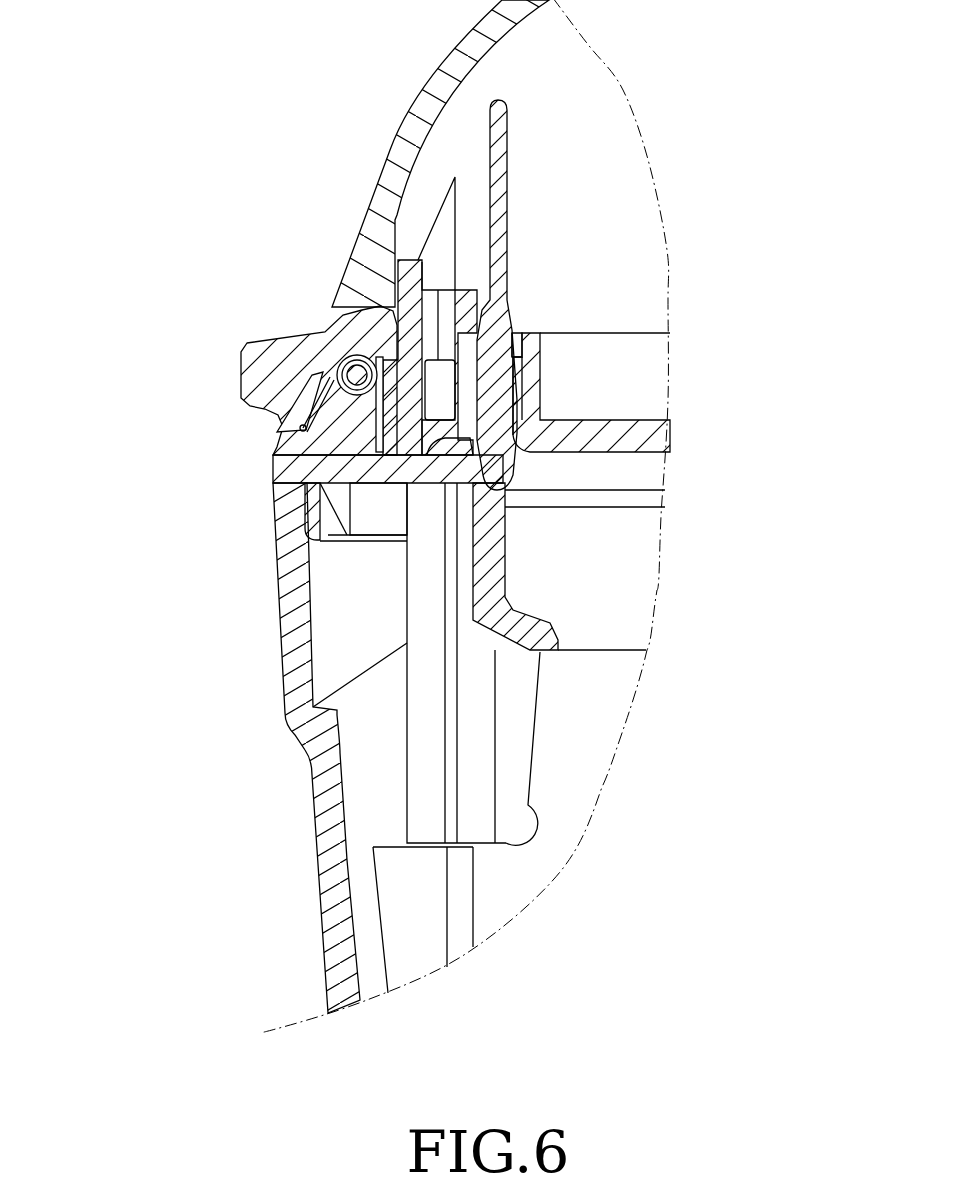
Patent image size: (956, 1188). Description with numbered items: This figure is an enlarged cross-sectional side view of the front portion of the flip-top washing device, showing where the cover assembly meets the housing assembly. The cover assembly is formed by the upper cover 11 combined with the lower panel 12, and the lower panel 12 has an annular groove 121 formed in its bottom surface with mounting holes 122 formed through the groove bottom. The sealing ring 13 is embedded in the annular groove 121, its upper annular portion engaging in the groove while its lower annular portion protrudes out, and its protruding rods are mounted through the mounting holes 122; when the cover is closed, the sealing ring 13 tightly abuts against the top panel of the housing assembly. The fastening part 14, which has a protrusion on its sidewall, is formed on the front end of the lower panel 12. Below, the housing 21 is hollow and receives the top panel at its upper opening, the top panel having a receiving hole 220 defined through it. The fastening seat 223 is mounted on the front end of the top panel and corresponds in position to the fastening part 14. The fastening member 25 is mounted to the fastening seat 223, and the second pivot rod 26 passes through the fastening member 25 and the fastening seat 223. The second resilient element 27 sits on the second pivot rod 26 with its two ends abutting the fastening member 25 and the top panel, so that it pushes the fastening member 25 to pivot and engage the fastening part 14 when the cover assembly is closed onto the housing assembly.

The upper cover 11 is at (415, 118).
The lower panel 12 is at (630, 373).
The annular groove 121 is at (518, 363).
The mounting holes 122 is at (520, 345).
The sealing ring 13 is at (507, 405).
The fastening part 14 is at (373, 310).
The housing 21 is at (325, 843).
The receiving hole 220 is at (505, 468).
The fastening seat 223 is at (330, 463).
The fastening member 25 is at (232, 373).
The second pivot rod 26 is at (352, 372).
The second resilient element 27 is at (303, 429).